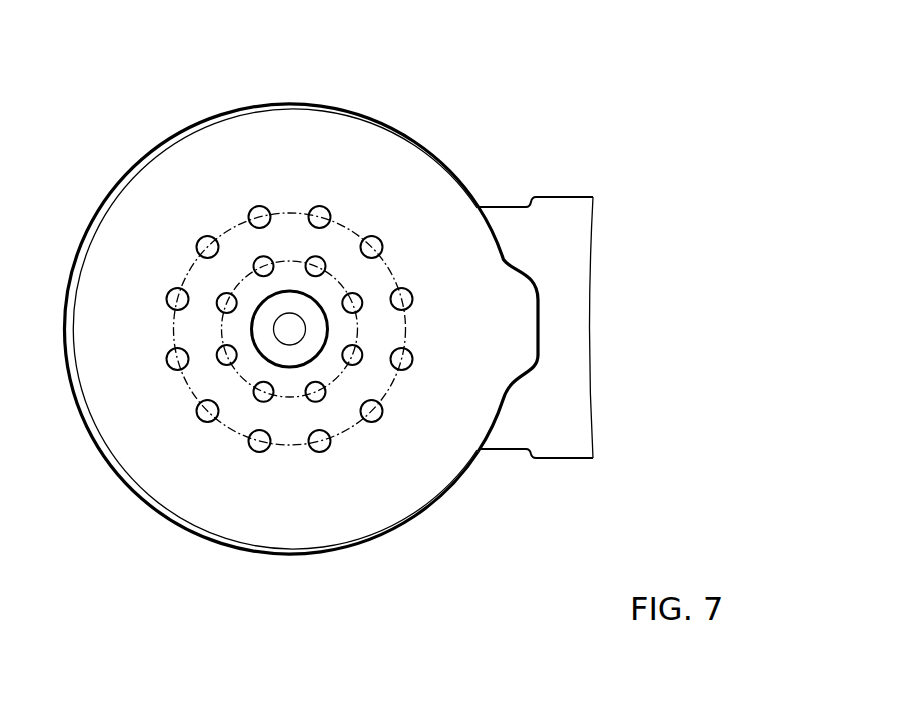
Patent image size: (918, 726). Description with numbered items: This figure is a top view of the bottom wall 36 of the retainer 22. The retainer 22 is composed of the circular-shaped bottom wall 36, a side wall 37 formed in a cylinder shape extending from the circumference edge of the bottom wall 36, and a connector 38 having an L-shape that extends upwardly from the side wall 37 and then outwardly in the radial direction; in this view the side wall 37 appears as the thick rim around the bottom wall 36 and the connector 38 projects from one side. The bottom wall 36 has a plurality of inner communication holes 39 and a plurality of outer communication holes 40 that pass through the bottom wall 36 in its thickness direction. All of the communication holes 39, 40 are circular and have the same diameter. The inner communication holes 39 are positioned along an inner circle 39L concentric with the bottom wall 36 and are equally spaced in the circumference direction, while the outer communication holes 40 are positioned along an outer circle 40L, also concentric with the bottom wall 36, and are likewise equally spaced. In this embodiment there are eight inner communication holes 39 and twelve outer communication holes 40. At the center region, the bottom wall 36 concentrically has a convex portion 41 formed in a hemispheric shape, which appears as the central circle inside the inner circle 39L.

The retainer 22 is at (487, 125).
The bottom wall 36 is at (368, 145).
The side wall 37 is at (158, 145).
The connector 38 is at (583, 238).
The inner communication holes 39 is at (222, 298).
The outer communication holes 40 is at (318, 207).
The convex portion 41 is at (284, 327).
The inner circle 39L is at (293, 393).
The outer circle 40L is at (352, 430).